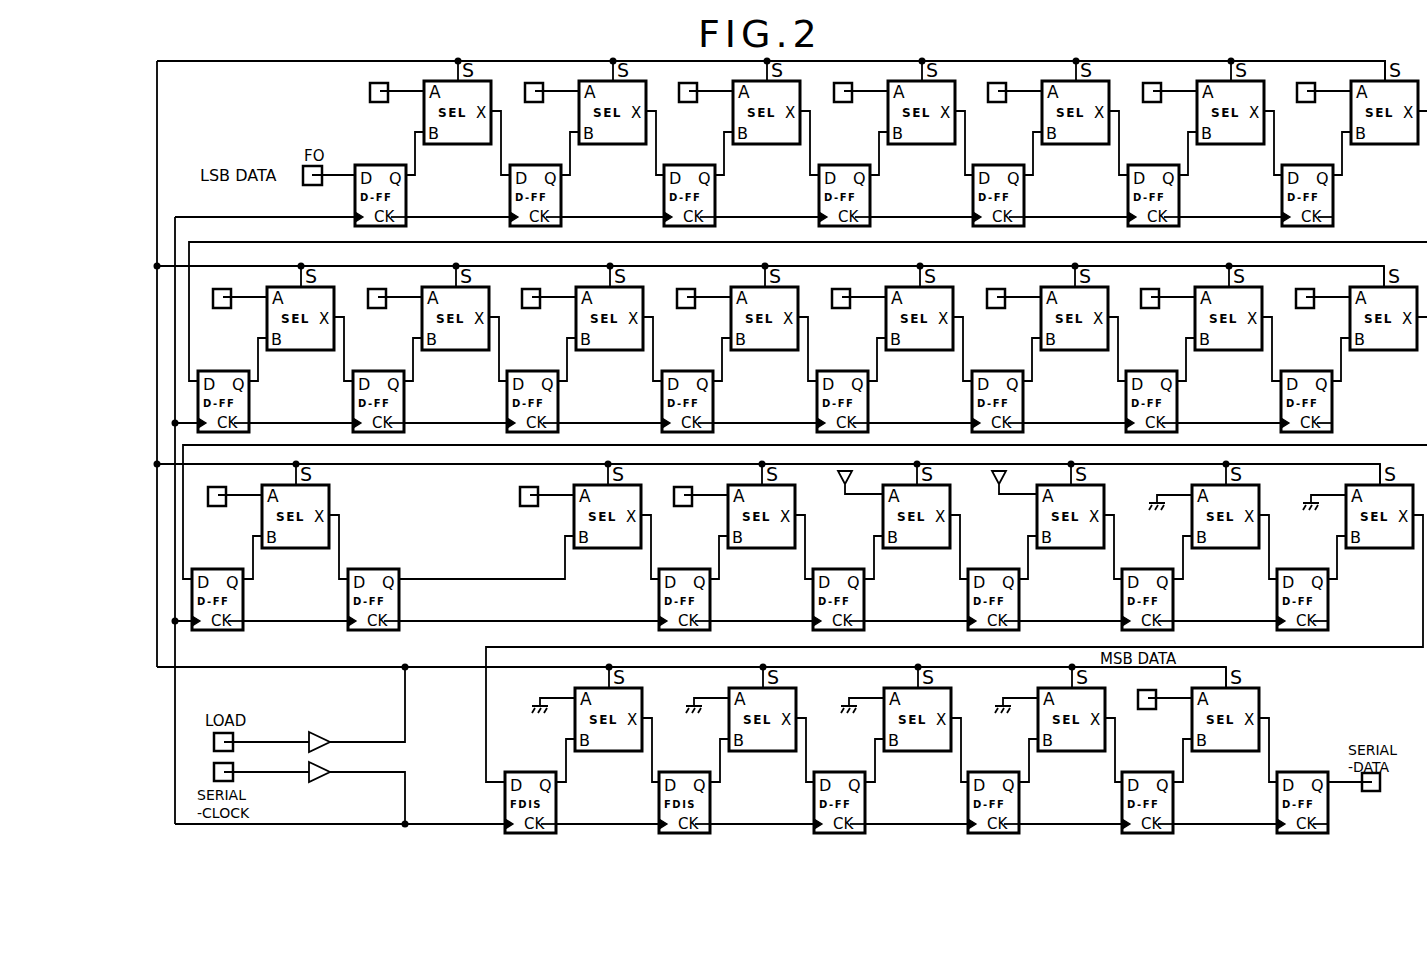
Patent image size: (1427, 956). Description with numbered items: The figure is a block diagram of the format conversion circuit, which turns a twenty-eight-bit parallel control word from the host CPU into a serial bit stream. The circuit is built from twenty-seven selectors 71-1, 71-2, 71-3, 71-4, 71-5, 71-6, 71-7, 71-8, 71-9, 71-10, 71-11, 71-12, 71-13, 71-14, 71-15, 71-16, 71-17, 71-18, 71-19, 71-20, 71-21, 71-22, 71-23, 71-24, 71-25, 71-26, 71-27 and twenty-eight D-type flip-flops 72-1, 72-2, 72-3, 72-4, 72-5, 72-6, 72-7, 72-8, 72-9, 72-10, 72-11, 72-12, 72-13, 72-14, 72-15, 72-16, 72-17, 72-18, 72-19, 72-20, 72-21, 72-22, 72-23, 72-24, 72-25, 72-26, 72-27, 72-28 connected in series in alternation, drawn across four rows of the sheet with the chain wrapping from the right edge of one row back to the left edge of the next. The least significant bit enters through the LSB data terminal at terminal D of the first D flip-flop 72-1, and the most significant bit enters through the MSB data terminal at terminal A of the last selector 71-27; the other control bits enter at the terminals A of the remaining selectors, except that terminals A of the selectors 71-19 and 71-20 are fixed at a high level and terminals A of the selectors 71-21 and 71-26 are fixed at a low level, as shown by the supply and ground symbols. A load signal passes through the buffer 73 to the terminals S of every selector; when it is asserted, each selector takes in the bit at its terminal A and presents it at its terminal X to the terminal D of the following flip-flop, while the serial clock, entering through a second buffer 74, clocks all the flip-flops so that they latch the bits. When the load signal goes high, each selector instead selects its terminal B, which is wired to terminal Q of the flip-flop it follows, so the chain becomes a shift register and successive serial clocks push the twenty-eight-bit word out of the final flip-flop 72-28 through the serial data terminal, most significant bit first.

The selector 71-1 is at (461, 144).
The selector 71-2 is at (616, 144).
The selector 71-3 is at (770, 144).
The selector 71-4 is at (925, 144).
The selector 71-5 is at (1079, 144).
The selector 71-6 is at (1234, 144).
The selector 71-7 is at (1388, 144).
The selector 71-8 is at (304, 350).
The selector 71-9 is at (459, 350).
The selector 71-10 is at (613, 350).
The selector 71-11 is at (768, 350).
The selector 71-12 is at (923, 350).
The selector 71-13 is at (1078, 350).
The selector 71-14 is at (1232, 350).
The selector 71-15 is at (1387, 350).
The selector 71-16 is at (299, 548).
The selector 71-17 is at (611, 548).
The selector 71-18 is at (765, 548).
The selector 71-19 is at (920, 548).
The selector 71-20 is at (1074, 548).
The selector 71-21 is at (1229, 548).
The selector 71-22 is at (1383, 548).
The selector 71-23 is at (612, 751).
The selector 71-24 is at (766, 751).
The selector 71-25 is at (921, 751).
The selector 71-26 is at (1075, 751).
The selector 71-27 is at (1229, 751).
The D-type flip-flop 72-1 is at (421, 195).
The D-type flip-flop 72-2 is at (576, 195).
The D-type flip-flop 72-3 is at (730, 195).
The D-type flip-flop 72-4 is at (885, 195).
The D-type flip-flop 72-5 is at (1039, 195).
The D-type flip-flop 72-6 is at (1194, 195).
The D-type flip-flop 72-7 is at (1348, 195).
The D-type flip-flop 72-8 is at (264, 401).
The D-type flip-flop 72-9 is at (419, 401).
The D-type flip-flop 72-10 is at (580, 401).
The D-type flip-flop 72-11 is at (735, 401).
The D-type flip-flop 72-12 is at (890, 401).
The D-type flip-flop 72-13 is at (1045, 401).
The D-type flip-flop 72-14 is at (1199, 401).
The D-type flip-flop 72-15 is at (1354, 401).
The D-type flip-flop 72-16 is at (265, 599).
The D-type flip-flop 72-17 is at (421, 599).
The D-type flip-flop 72-18 is at (732, 599).
The D-type flip-flop 72-19 is at (886, 599).
The D-type flip-flop 72-20 is at (1041, 599).
The D-type flip-flop 72-21 is at (1195, 599).
The D-type flip-flop 72-22 is at (1350, 599).
The D-type flip-flop 72-23 is at (578, 802).
The D-type flip-flop 72-24 is at (732, 802).
The D-type flip-flop 72-25 is at (887, 802).
The D-type flip-flop 72-26 is at (1041, 802).
The D-type flip-flop 72-27 is at (1195, 802).
The D-type flip-flop 72-28 is at (1339, 802).
The buffer 73 is at (336, 724).
The buffer 74 is at (322, 782).